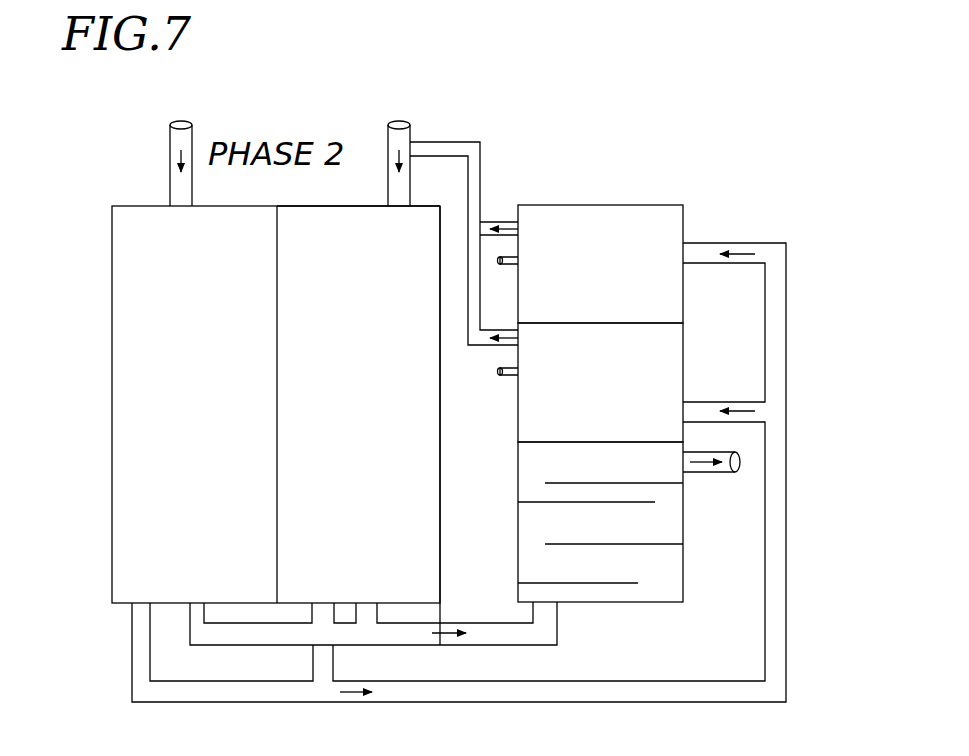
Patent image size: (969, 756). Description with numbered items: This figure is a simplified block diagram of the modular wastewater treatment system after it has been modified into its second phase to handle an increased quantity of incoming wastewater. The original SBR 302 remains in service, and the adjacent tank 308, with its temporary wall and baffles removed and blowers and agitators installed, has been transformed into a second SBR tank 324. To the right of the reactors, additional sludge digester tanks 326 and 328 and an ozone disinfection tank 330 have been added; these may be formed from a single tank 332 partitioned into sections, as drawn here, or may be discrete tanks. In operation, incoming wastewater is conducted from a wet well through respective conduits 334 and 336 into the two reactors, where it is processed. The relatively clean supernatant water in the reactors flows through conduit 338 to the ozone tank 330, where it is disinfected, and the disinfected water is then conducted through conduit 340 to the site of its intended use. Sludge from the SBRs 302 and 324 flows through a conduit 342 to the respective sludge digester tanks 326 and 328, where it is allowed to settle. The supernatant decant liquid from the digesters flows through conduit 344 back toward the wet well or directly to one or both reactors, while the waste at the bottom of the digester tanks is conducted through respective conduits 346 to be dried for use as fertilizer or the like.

The SBR 302 is at (440, 548).
The tank 308 is at (85, 452).
The second SBR tank 324 is at (112, 355).
The sludge digester tank 326 is at (683, 312).
The sludge digester tank 328 is at (683, 372).
The ozone disinfection tank 330 is at (683, 524).
The single tank 332 is at (660, 620).
The conduit 334 is at (170, 155).
The conduit 336 is at (410, 133).
The conduit 338 is at (527, 646).
The conduit 340 is at (733, 452).
The conduit 342 is at (566, 702).
The conduit 344 is at (480, 181).
The conduits 346 is at (505, 264).